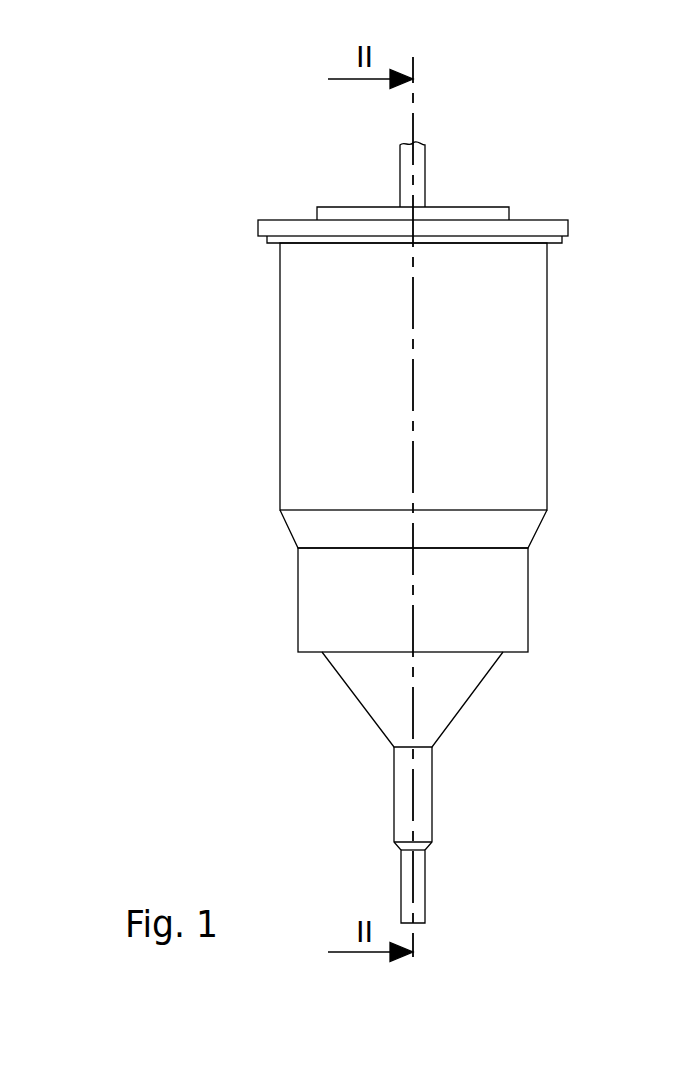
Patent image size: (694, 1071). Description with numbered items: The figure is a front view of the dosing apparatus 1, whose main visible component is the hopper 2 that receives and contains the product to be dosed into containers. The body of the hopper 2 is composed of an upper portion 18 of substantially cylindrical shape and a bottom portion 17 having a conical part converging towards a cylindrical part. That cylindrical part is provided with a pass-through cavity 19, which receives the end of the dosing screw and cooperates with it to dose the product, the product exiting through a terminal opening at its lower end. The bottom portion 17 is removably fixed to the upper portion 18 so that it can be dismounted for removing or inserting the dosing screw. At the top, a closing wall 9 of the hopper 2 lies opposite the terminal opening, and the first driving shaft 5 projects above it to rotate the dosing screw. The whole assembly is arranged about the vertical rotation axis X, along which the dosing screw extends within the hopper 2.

The dosing apparatus 1 is at (192, 110).
The hopper 2 is at (345, 447).
The first driving shaft 5 is at (420, 167).
The closing wall 9 is at (533, 227).
The bottom portion 17 is at (365, 688).
The upper portion 18 is at (318, 262).
The pass-through cavity 19 is at (402, 787).
The rotation axis X is at (413, 475).